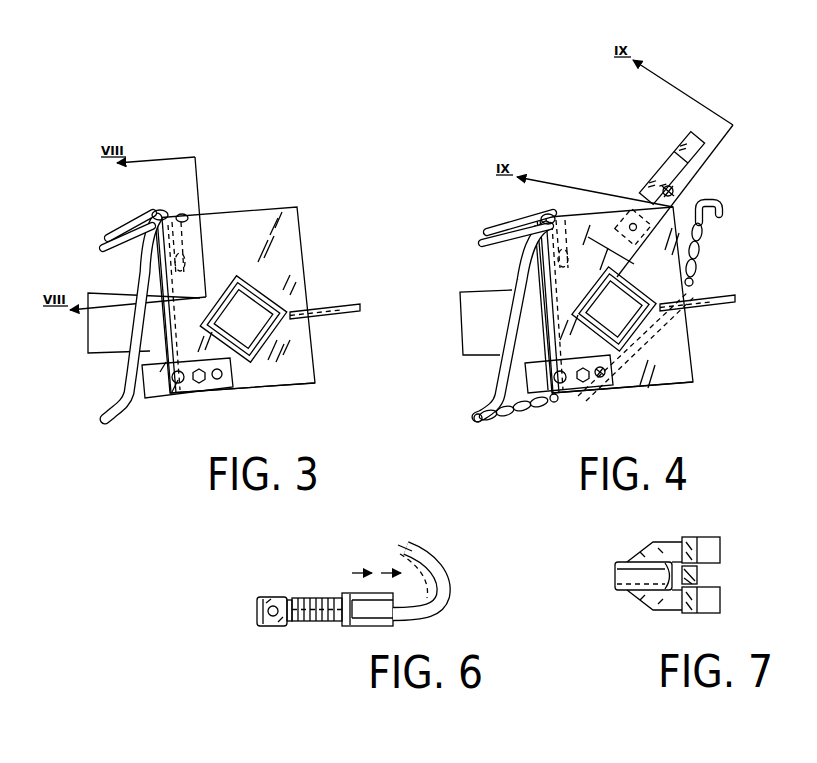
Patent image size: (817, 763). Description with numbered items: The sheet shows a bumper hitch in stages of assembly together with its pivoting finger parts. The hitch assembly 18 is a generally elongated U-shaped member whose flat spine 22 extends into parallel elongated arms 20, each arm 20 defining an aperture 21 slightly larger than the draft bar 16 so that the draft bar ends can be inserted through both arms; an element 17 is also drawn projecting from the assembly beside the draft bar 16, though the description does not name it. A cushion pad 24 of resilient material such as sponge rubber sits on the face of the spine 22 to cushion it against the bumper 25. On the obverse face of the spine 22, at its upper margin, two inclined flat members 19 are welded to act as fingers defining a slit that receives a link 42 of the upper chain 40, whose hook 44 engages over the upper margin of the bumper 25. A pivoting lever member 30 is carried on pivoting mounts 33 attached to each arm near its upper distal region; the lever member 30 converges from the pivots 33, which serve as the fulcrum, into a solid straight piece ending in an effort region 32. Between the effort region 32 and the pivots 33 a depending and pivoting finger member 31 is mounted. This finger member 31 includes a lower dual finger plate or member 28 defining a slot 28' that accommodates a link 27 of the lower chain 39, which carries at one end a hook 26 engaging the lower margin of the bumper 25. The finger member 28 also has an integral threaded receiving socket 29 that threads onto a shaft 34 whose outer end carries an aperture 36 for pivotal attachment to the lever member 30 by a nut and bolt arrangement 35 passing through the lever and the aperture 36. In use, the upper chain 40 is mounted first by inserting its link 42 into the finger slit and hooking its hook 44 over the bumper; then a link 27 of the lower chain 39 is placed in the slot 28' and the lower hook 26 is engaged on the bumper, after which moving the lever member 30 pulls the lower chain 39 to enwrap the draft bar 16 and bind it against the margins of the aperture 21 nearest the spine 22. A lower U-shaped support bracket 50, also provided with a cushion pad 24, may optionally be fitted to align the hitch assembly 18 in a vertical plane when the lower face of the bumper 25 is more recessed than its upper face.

In FIG. 3, the draft bar 16 is at (277, 328).
In FIG. 4, the draft bar 16 is at (647, 301).
In FIG. 3, the rod 17 is at (343, 305).
In FIG. 4, the rod 17 is at (737, 298).
In FIG. 3, the hitch assembly 18 is at (308, 232).
In FIG. 4, the hitch assembly 18 is at (696, 344).
In FIG. 4, the inclined flat members 19 is at (578, 232).
In FIG. 3, the arms 20 is at (310, 364).
In FIG. 4, the arms 20 is at (684, 378).
In FIG. 3, the aperture 21 is at (238, 278).
In FIG. 4, the aperture 21 is at (578, 299).
In FIG. 4, the spine 22 is at (553, 336).
In FIG. 4, the cushion pad 24 is at (547, 303).
In FIG. 3, the bumper 25 is at (125, 403).
In FIG. 4, the bumper 25 is at (497, 365).
In FIG. 4, the hook 26 is at (457, 416).
In FIG. 4, the link 27 is at (571, 402).
In FIG. 4, the finger member 28 is at (716, 254).
In FIG. 6, the finger member 28 is at (448, 579).
In FIG. 7, the finger member 28 is at (733, 600).
In FIG. 7, the slot 28' is at (739, 560).
In FIG. 4, the threaded receiving socket 29 is at (714, 214).
In FIG. 6, the threaded receiving socket 29 is at (343, 626).
In FIG. 7, the threaded receiving socket 29 is at (632, 572).
In FIG. 4, the lever member 30 is at (703, 195).
In FIG. 6, the finger member 31 is at (449, 553).
In FIG. 4, the effort region 32 is at (680, 148).
In FIG. 4, the pivoting mounts 33 is at (629, 221).
In FIG. 6, the shaft 34 is at (313, 597).
In FIG. 4, the nut and bolt arrangement 35 is at (662, 180).
In FIG. 6, the aperture 36 is at (259, 607).
In FIG. 4, the lower chain 39 is at (630, 373).
In FIG. 3, the upper chain 40 is at (152, 209).
In FIG. 3, the link 42 is at (186, 217).
In FIG. 3, the hook 44 is at (96, 251).
In FIG. 4, the hook 44 is at (480, 236).
In FIG. 3, the lower U shaped support bracket 50 is at (215, 387).